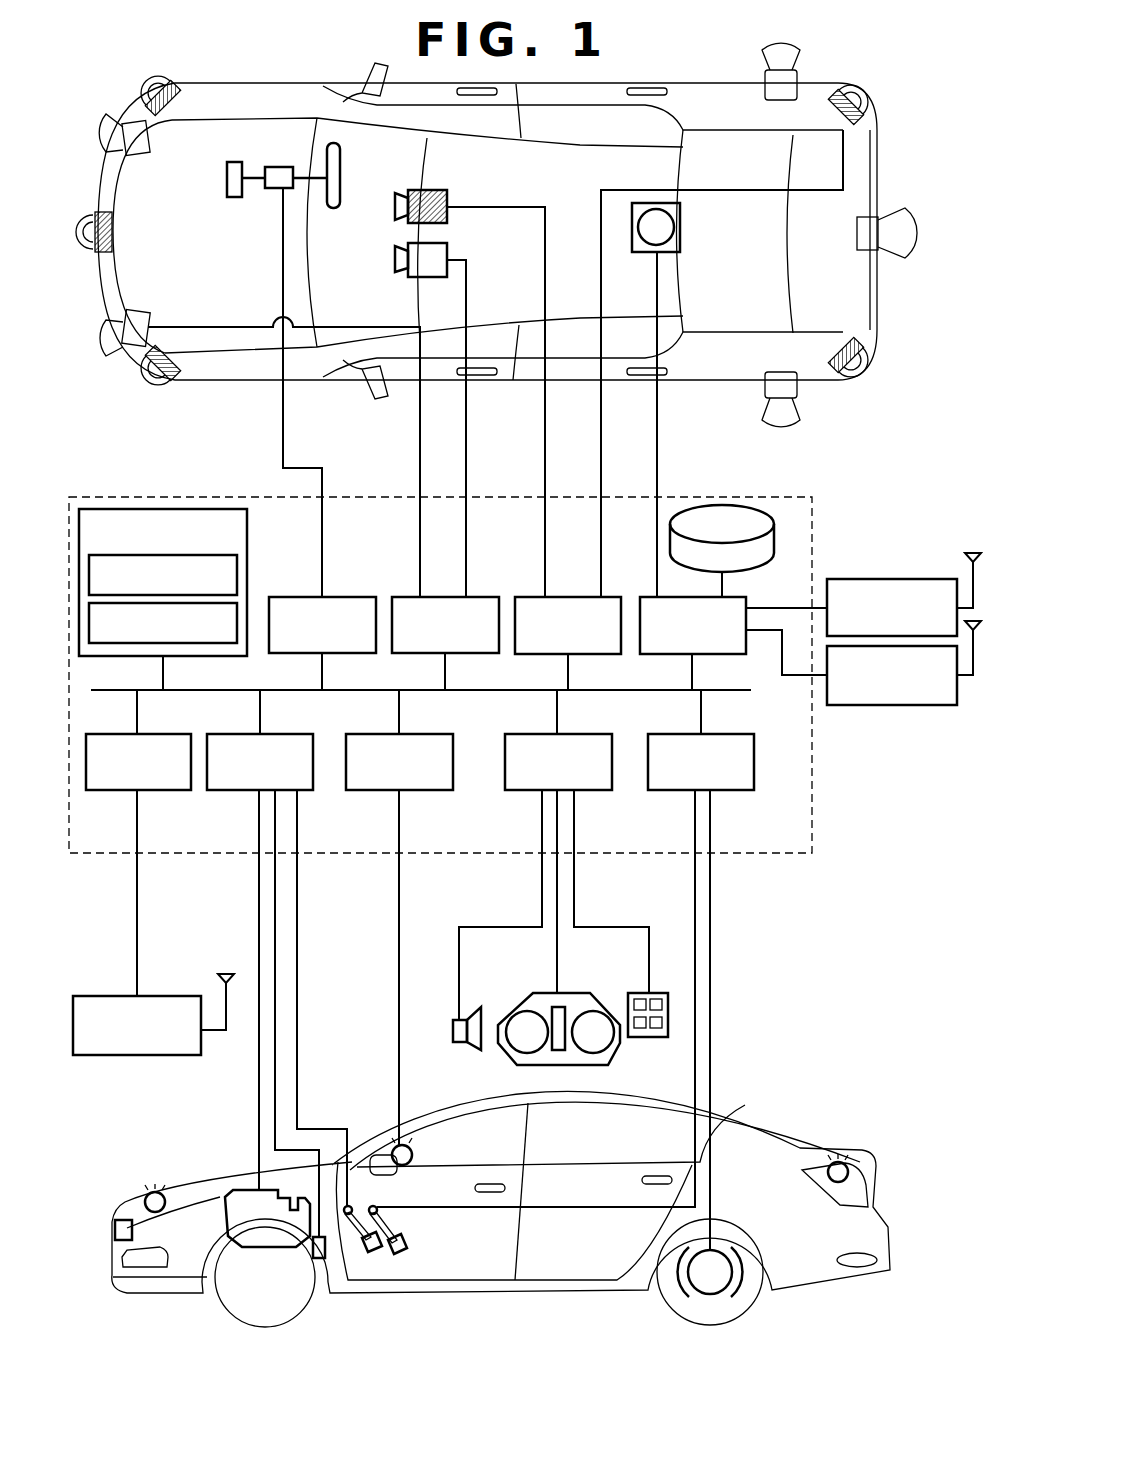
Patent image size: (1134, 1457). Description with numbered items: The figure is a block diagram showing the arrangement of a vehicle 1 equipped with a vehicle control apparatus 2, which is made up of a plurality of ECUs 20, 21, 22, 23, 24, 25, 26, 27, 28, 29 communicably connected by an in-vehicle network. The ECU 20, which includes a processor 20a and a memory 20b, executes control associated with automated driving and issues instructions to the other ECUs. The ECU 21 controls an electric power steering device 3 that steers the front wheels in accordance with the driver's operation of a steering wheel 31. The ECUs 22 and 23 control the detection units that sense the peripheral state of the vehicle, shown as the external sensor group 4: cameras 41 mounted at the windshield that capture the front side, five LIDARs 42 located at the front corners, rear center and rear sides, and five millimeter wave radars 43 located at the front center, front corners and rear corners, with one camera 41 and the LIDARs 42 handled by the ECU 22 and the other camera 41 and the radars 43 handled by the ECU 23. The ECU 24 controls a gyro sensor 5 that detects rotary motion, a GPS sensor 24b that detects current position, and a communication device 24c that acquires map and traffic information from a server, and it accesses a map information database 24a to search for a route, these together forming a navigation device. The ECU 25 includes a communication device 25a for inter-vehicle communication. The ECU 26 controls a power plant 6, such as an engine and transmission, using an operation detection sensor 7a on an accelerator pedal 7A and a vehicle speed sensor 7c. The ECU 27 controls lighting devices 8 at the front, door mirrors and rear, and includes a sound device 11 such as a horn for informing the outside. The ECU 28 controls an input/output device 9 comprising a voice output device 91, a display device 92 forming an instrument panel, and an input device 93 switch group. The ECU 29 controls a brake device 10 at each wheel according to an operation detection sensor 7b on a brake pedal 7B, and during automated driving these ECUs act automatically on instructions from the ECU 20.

The vehicle 1 is at (889, 128).
The vehicle control apparatus 2 is at (812, 853).
The electric power steering device 3 is at (235, 198).
The external sensor group 4 is at (125, 91).
The gyro sensor 5 is at (682, 227).
The power plant 6 is at (235, 1190).
The operation detection sensor 7a is at (391, 1187).
The accelerator pedal 7A is at (382, 1252).
The operation detection sensor 7b is at (418, 1215).
The brake pedal 7B is at (407, 1246).
The vehicle speed sensor 7c is at (321, 1258).
The lighting devices 8 is at (145, 1200).
The input/output device 9 is at (547, 1038).
The brake device 10 is at (720, 1294).
The sound device 11 is at (115, 1228).
The ECU 20 is at (197, 553).
The processor 20a is at (237, 575).
The memory 20b is at (237, 623).
The ECU 21 is at (345, 597).
The ECU 22 is at (438, 597).
The ECU 23 is at (565, 597).
The ECU 24 is at (630, 597).
The map information database 24a is at (718, 505).
The GPS sensor 24b is at (882, 579).
The communication device 24c is at (880, 705).
The ECU 25 is at (168, 790).
The communication device 25a is at (138, 1055).
The ECU 26 is at (240, 790).
The ECU 27 is at (432, 790).
The ECU 28 is at (598, 790).
The ECU 29 is at (738, 790).
The steering wheel 31 is at (334, 210).
The camera 41 is at (448, 210).
The LIDAR 42 is at (150, 160).
The millimeter wave radar 43 is at (172, 115).
The voice output device 91 is at (453, 1025).
The display device 92 is at (518, 1000).
The input device 93 is at (650, 1037).